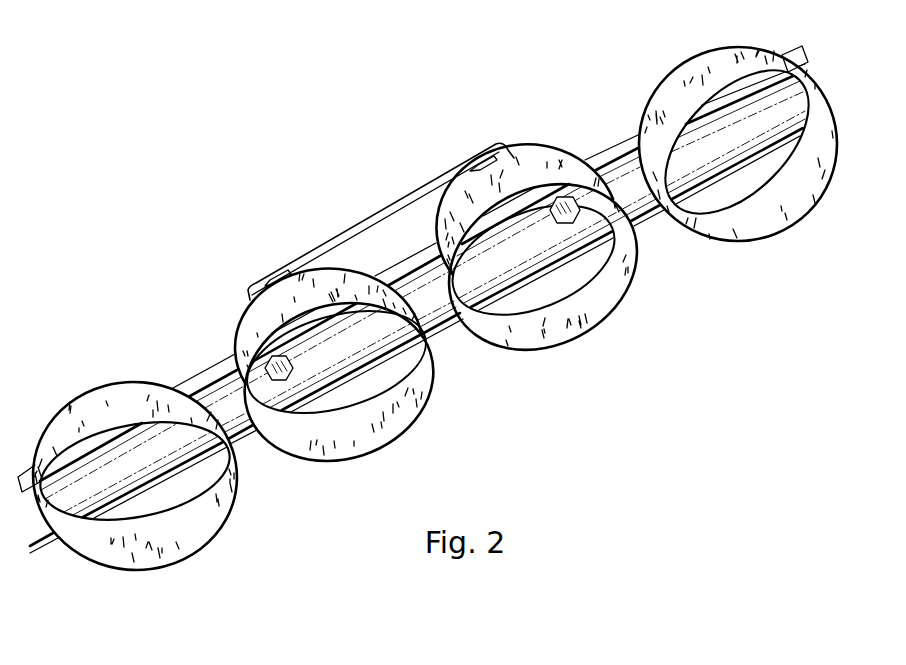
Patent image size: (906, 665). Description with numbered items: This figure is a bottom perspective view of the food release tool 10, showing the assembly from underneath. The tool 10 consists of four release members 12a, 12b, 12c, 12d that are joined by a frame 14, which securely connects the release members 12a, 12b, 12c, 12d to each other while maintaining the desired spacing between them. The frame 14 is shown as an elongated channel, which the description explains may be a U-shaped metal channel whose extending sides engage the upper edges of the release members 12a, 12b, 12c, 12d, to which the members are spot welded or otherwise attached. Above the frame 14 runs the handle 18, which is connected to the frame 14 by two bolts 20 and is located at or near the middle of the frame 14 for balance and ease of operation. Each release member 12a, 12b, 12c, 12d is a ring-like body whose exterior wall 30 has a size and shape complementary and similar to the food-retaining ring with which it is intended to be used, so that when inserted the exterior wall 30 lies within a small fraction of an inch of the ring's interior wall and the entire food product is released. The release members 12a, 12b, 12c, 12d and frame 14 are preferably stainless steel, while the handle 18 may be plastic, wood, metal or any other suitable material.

The food release tool 10 is at (174, 300).
The release member 12a is at (177, 572).
The release member 12b is at (405, 452).
The release member 12c is at (597, 338).
The release member 12d is at (793, 230).
The frame 14 is at (601, 160).
The handle 18 is at (387, 218).
The bolts 20 is at (264, 360).
The exterior wall 30 is at (731, 70).